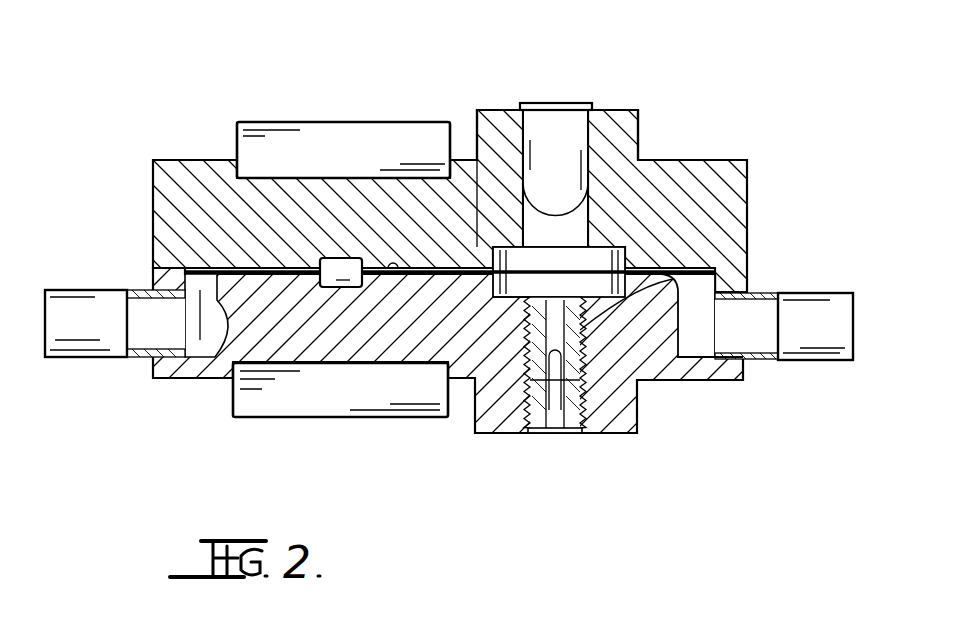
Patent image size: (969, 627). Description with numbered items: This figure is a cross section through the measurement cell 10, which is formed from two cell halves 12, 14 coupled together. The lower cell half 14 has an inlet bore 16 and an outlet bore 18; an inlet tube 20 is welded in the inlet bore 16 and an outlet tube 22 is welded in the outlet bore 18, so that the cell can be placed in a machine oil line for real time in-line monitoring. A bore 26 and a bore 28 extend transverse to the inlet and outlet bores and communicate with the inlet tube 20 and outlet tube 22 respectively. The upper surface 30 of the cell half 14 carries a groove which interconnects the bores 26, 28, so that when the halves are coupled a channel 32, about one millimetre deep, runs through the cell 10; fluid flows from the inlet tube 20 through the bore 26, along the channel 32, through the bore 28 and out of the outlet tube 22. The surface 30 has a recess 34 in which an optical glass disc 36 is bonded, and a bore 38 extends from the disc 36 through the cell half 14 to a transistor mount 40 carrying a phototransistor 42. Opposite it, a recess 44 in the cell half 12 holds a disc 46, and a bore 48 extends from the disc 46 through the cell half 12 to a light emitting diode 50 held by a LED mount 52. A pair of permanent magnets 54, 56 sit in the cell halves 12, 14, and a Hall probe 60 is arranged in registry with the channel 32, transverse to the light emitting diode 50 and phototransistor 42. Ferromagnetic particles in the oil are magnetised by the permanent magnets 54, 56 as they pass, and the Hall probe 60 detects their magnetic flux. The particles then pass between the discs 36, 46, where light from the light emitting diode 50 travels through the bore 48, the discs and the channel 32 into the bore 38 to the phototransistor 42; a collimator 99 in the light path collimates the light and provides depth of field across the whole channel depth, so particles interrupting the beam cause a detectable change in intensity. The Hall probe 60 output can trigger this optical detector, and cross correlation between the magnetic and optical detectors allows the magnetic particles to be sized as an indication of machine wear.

The measurement cell 10 is at (686, 150).
The cell half 12 is at (726, 192).
The cell half 14 is at (653, 342).
The inlet bore 16 is at (162, 378).
The outlet bore 18 is at (748, 264).
The inlet tube 20 is at (76, 305).
The outlet tube 22 is at (820, 317).
The bore 26 is at (197, 288).
The bore 28 is at (680, 287).
The upper surface 30 is at (383, 275).
The channel 32 is at (420, 266).
The recess 34 is at (483, 288).
The optical glass disc 36 is at (527, 292).
The bore 38 is at (644, 383).
The transistor mount 40 is at (473, 433).
The phototransistor 42 is at (593, 428).
The recess 44 is at (477, 247).
The disc 46 is at (515, 247).
The bore 48 is at (575, 232).
The light emitting diode 50 is at (545, 146).
The LED mount 52 is at (565, 101).
The permanent magnet 54 is at (275, 141).
The permanent magnet 56 is at (318, 385).
The Hall probe 60 is at (339, 258).
The collimator 99 is at (553, 352).